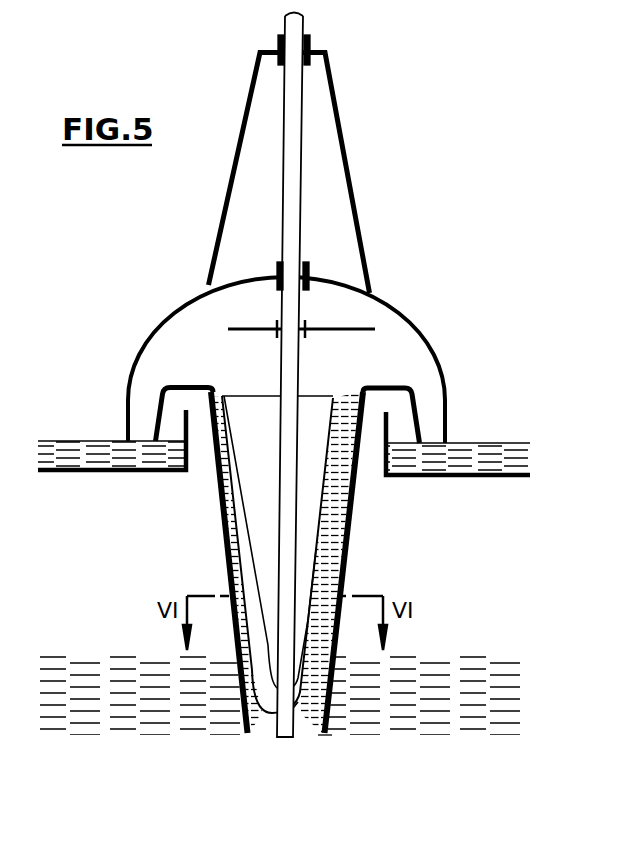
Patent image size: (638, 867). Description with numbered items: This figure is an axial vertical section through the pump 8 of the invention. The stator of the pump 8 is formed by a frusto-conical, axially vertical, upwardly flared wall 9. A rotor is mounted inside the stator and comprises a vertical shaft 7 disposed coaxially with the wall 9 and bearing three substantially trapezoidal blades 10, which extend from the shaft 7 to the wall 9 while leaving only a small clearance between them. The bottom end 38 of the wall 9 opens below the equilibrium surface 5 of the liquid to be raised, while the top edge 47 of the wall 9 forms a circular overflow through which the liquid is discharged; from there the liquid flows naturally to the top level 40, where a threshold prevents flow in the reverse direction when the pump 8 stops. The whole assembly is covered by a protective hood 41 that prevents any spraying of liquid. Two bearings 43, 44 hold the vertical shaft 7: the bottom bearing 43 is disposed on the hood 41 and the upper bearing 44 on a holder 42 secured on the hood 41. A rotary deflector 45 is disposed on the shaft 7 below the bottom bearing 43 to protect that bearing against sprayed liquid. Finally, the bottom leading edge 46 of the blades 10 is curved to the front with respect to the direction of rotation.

The equilibrium surface 5 is at (465, 660).
The vertical shaft 7 is at (293, 376).
The pump 8 is at (328, 173).
The frusto-conical wall 9 is at (350, 548).
The blades 10 is at (255, 420).
The bottom end 38 is at (330, 734).
The top level 40 is at (490, 455).
The protective hood 41 is at (395, 306).
The holder 42 is at (344, 140).
The bottom bearing 43 is at (306, 270).
The bearing 44 is at (307, 46).
The rotary deflector 45 is at (402, 322).
The bottom leading edge 46 is at (298, 703).
The top edge 47 is at (393, 386).